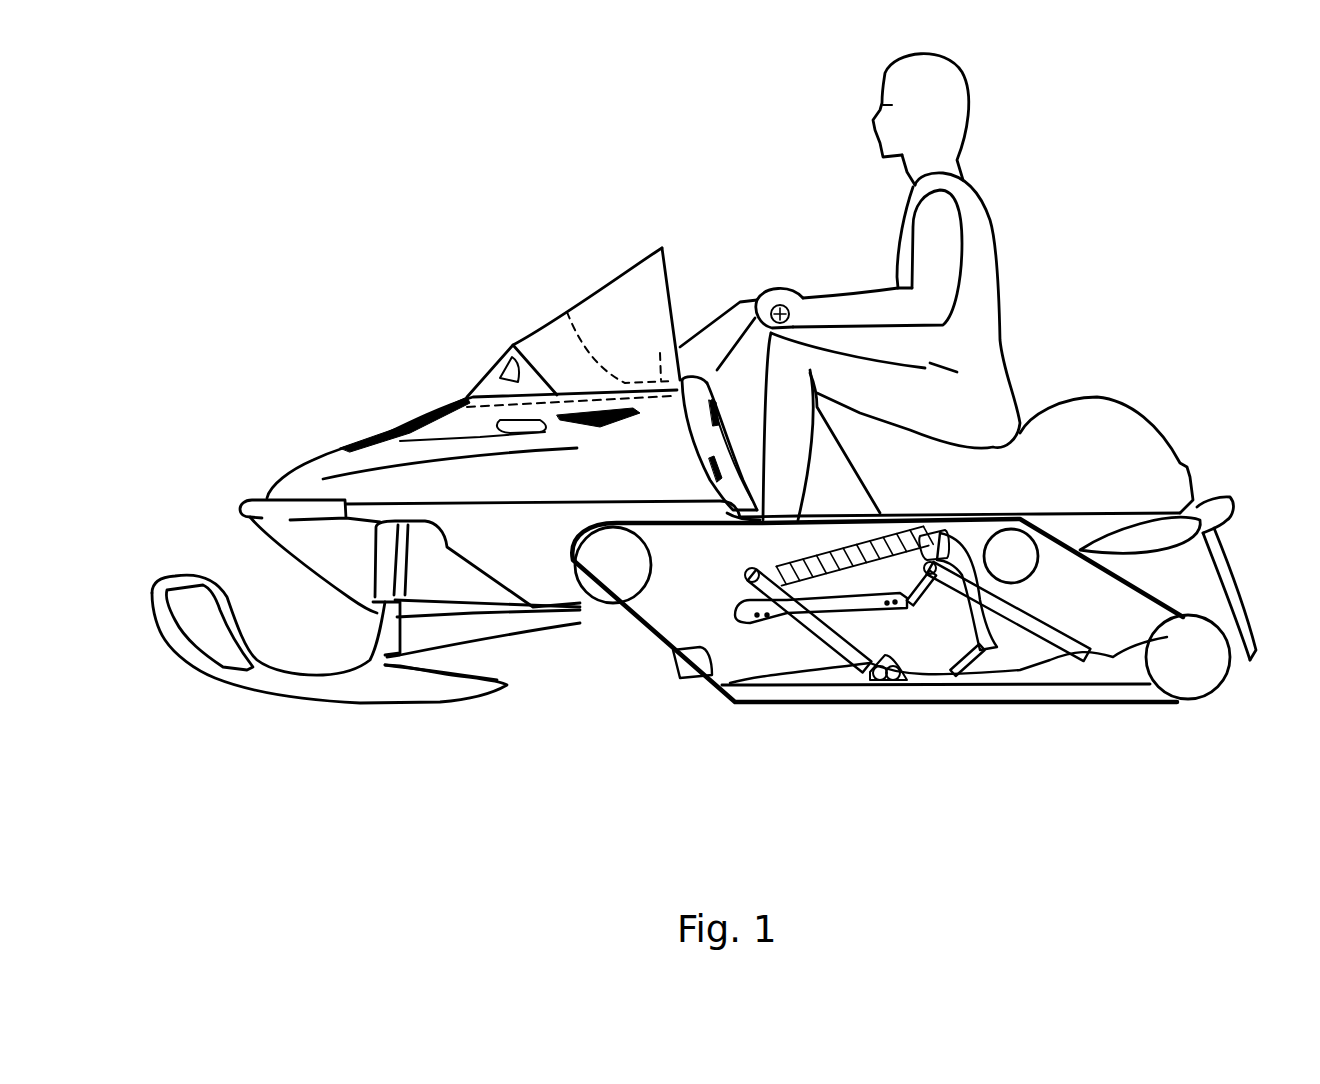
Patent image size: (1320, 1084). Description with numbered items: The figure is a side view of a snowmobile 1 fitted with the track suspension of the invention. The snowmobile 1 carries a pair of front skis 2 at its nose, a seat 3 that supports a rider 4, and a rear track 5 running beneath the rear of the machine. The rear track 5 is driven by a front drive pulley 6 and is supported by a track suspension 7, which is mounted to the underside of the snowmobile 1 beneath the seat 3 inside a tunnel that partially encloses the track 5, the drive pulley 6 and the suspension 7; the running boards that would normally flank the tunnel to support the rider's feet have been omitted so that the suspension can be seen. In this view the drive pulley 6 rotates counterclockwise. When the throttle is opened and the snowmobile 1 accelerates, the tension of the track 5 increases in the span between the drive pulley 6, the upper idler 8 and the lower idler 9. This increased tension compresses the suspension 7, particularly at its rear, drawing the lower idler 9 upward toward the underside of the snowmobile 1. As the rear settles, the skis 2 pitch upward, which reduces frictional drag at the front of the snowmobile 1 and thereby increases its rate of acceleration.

The snowmobile 1 is at (340, 367).
The front skis 2 is at (360, 703).
The seat 3 is at (1120, 402).
The rider 4 is at (998, 257).
The rear track 5 is at (653, 650).
The front drive pulley 6 is at (655, 583).
The track suspension 7 is at (966, 740).
The upper idler 8 is at (1028, 578).
The lower idler 9 is at (1168, 618).